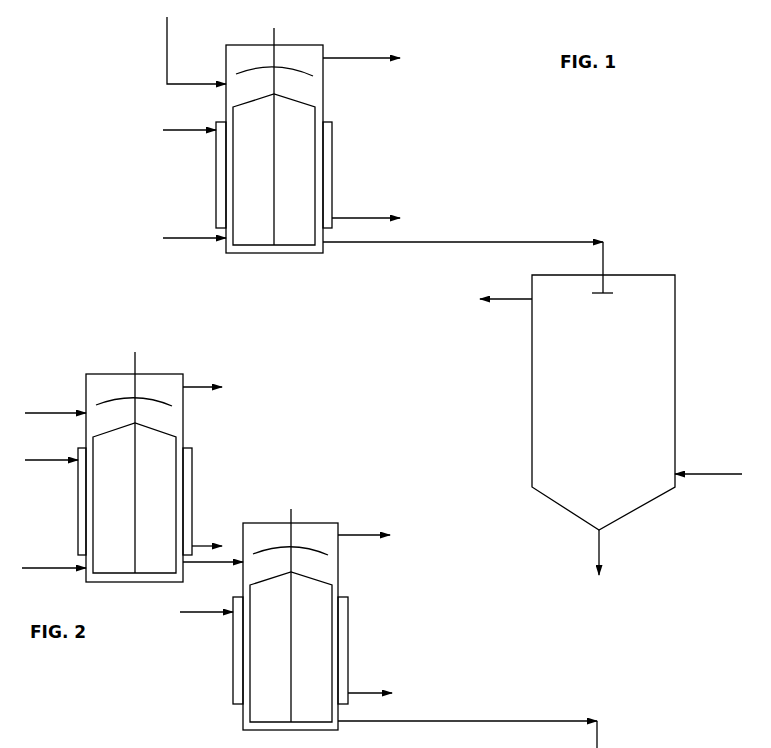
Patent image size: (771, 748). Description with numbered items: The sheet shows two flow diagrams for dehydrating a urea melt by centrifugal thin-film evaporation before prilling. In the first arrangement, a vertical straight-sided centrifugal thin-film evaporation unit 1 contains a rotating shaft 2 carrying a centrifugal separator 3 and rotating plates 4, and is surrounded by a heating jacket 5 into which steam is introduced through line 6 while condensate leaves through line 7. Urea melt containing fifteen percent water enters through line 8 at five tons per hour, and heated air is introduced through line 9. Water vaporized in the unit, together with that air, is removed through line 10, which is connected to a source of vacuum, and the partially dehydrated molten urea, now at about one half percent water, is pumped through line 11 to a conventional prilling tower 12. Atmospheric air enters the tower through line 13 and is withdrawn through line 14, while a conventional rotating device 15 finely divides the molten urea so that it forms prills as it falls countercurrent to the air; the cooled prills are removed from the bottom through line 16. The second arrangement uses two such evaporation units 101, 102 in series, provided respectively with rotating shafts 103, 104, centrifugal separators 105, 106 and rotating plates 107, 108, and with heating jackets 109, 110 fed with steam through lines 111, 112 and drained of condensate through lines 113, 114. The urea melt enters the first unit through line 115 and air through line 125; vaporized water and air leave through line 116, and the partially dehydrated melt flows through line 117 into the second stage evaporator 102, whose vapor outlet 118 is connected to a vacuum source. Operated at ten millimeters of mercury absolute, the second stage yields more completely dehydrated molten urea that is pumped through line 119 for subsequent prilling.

In FIG. 1, the centrifugal thin-film evaporation unit 1 is at (226, 100).
In FIG. 1, the rotating shaft 2 is at (278, 33).
In FIG. 1, the centrifugal separator 3 is at (308, 76).
In FIG. 1, the rotating plates 4 is at (256, 174).
In FIG. 1, the heating jacket 5 is at (216, 172).
In FIG. 1, the line 6 is at (186, 128).
In FIG. 1, the line 7 is at (366, 218).
In FIG. 1, the line 8 is at (195, 80).
In FIG. 1, the line 9 is at (198, 244).
In FIG. 1, the line 10 is at (348, 48).
In FIG. 1, the line 11 is at (450, 242).
In FIG. 1, the prilling tower 12 is at (675, 345).
In FIG. 1, the line 13 is at (726, 474).
In FIG. 1, the line 14 is at (500, 299).
In FIG. 1, the rotating device 15 is at (598, 299).
In FIG. 1, the line 16 is at (599, 546).
In FIG. 2, the centrifugal thin-film evaporation unit 101 is at (183, 374).
In FIG. 2, the centrifugal thin-film evaporation unit 102 is at (328, 507).
In FIG. 2, the rotating shaft 103 is at (137, 367).
In FIG. 2, the rotating shaft 104 is at (289, 518).
In FIG. 2, the centrifugal separator 105 is at (167, 405).
In FIG. 2, the centrifugal separator 106 is at (326, 556).
In FIG. 2, the rotating plates 107 is at (128, 510).
In FIG. 2, the rotating plates 108 is at (282, 670).
In FIG. 2, the heating jacket 109 is at (78, 512).
In FIG. 2, the heating jacket 110 is at (233, 662).
In FIG. 2, the line 111 is at (46, 460).
In FIG. 2, the line 112 is at (186, 612).
In FIG. 2, the line 113 is at (200, 546).
In FIG. 2, the line 114 is at (364, 693).
In FIG. 2, the line 115 is at (54, 413).
In FIG. 2, the line 116 is at (205, 387).
In FIG. 2, the line 117 is at (218, 562).
In FIG. 2, the vapor outlet 118 is at (380, 535).
In FIG. 2, the line 119 is at (476, 721).
In FIG. 2, the line 125 is at (42, 570).